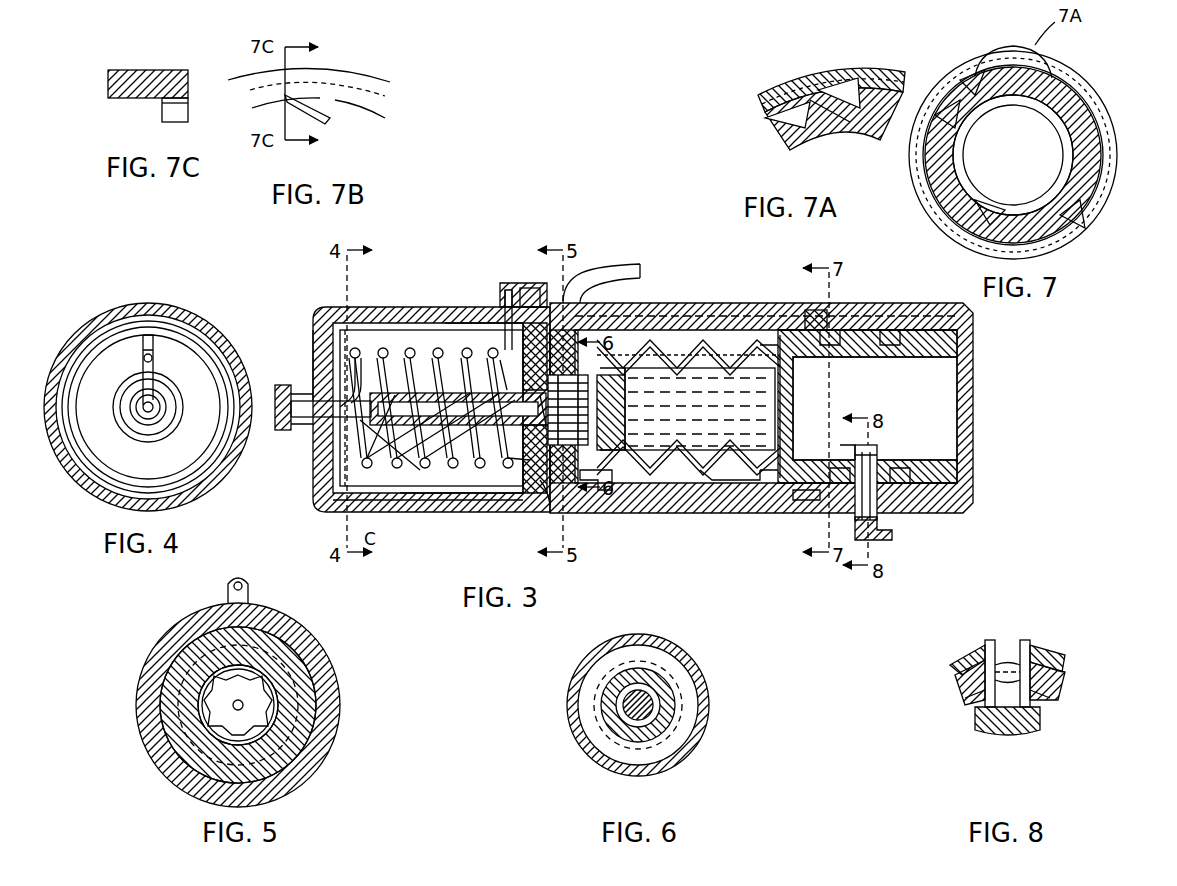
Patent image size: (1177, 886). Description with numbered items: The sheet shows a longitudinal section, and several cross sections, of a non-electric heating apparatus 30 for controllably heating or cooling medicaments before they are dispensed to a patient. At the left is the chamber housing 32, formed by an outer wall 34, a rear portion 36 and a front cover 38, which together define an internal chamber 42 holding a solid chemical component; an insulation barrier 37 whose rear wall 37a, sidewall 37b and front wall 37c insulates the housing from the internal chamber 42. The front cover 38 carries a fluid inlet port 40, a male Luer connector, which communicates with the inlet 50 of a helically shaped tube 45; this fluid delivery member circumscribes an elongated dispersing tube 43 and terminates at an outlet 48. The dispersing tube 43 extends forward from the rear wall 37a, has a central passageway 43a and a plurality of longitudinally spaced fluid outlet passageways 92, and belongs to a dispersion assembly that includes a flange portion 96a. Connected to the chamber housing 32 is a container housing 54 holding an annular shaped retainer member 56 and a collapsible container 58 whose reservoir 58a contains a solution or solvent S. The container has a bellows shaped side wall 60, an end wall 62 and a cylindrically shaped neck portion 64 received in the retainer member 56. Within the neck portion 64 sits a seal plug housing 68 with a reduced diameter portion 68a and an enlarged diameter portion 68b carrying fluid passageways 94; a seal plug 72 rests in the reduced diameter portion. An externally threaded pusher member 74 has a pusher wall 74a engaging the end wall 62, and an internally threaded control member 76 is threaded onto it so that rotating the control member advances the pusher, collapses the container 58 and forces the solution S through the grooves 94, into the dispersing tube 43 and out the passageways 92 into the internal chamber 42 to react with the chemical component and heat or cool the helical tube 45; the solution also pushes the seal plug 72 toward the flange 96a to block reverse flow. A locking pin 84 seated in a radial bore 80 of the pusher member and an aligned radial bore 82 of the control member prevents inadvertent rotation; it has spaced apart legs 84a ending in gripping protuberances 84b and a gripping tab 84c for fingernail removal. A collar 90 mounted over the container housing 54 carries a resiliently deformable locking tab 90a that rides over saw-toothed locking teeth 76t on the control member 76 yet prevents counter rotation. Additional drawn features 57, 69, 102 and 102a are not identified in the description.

In FIG. 3, the non-electric heating apparatus 30 is at (702, 300).
In FIG. 3, the chamber housing 32 is at (420, 310).
In FIG. 4, the chamber housing 32 is at (185, 320).
In FIG. 3, the outer wall 34 is at (433, 512).
In FIG. 4, the outer wall 34 is at (88, 318).
In FIG. 3, the rear portion 36 is at (522, 505).
In FIG. 3, the insulation barrier 37 is at (383, 312).
In FIG. 4, the insulation barrier 37 is at (93, 368).
In FIG. 3, the rear wall 37a is at (470, 496).
In FIG. 3, the sidewall 37b is at (470, 325).
In FIG. 3, the front wall 37c is at (325, 330).
In FIG. 3, the front cover 38 is at (355, 395).
In FIG. 3, the fluid inlet port 40 is at (290, 385).
In FIG. 3, the internal chamber 42 is at (432, 397).
In FIG. 3, the elongated dispersing tube 43 is at (412, 470).
In FIG. 3, the central passageway 43a is at (418, 409).
In FIG. 3, the helically shaped tube 45 is at (372, 455).
In FIG. 4, the helically shaped tube 45 is at (149, 345).
In FIG. 3, the outlet 48 is at (506, 300).
In FIG. 3, the inlet 50 is at (305, 418).
In FIG. 3, the container housing 54 is at (654, 305).
In FIG. 5, the container housing 54 is at (338, 675).
In FIG. 3, the annular shaped retainer member 56 is at (578, 492).
In FIG. 5, the annular shaped retainer member 56 is at (285, 703).
In FIG. 4, the central bore 57 is at (200, 343).
In FIG. 3, the collapsible container 58 is at (655, 470).
In FIG. 3, the reservoir 58a is at (740, 475).
In FIG. 3, the bellows shaped side wall 60 is at (712, 480).
In FIG. 3, the end wall 62 is at (792, 383).
In FIG. 3, the neck portion 64 is at (535, 462).
In FIG. 3, the seal plug housing 68 is at (630, 478).
In FIG. 5, the seal plug housing 68 is at (290, 742).
In FIG. 6, the seal plug housing 68 is at (670, 650).
In FIG. 3, the reduced diameter portion 68a is at (628, 428).
In FIG. 3, the enlarged diameter portion 68b is at (628, 405).
In FIG. 3, the bracket 69 is at (605, 490).
In FIG. 3, the seal plug 72 is at (622, 388).
In FIG. 6, the seal plug 72 is at (672, 682).
In FIG. 3, the externally threaded pusher member 74 is at (928, 470).
In FIG. 7, the externally threaded pusher member 74 is at (1068, 170).
In FIG. 8, the externally threaded pusher member 74 is at (1062, 655).
In FIG. 3, the pusher wall 74a is at (795, 405).
In FIG. 3, the internally threaded control member 76 is at (870, 305).
In FIG. 7, the internally threaded control member 76 is at (1100, 152).
In FIG. 7A, the internally threaded control member 76 is at (838, 148).
In FIG. 8, the internally threaded control member 76 is at (1052, 705).
In FIG. 7, the locking teeth 76t is at (945, 210).
In FIG. 7A, the locking teeth 76t is at (775, 132).
In FIG. 3, the radial bore 80 is at (852, 452).
In FIG. 3, the radial bore 82 is at (850, 500).
In FIG. 3, the locking pin 84 is at (877, 458).
In FIG. 8, the locking pin 84 is at (978, 725).
In FIG. 8, the spaced apart legs 84a is at (975, 680).
In FIG. 8, the gripping protuberances 84b is at (990, 642).
In FIG. 3, the gripping tab 84c is at (893, 535).
In FIG. 3, the collar 90 is at (835, 300).
In FIG. 7, the collar 90 is at (1000, 62).
In FIG. 7A, the collar 90 is at (872, 72).
In FIG. 7B, the collar 90 is at (332, 78).
In FIG. 7C, the collar 90 is at (160, 70).
In FIG. 7A, the locking tab 90a is at (835, 90).
In FIG. 7B, the locking tab 90a is at (322, 118).
In FIG. 3, the fluid outlet passageways 92 is at (400, 395).
In FIG. 3, the fluid passageways 94 is at (640, 355).
In FIG. 5, the fluid passageways 94 is at (320, 660).
In FIG. 3, the flange portion 96a is at (545, 500).
In FIG. 3, the tube 102 is at (641, 268).
In FIG. 3, the tube connector 102a is at (525, 290).
In FIG. 3, the solution or solvent S is at (700, 409).